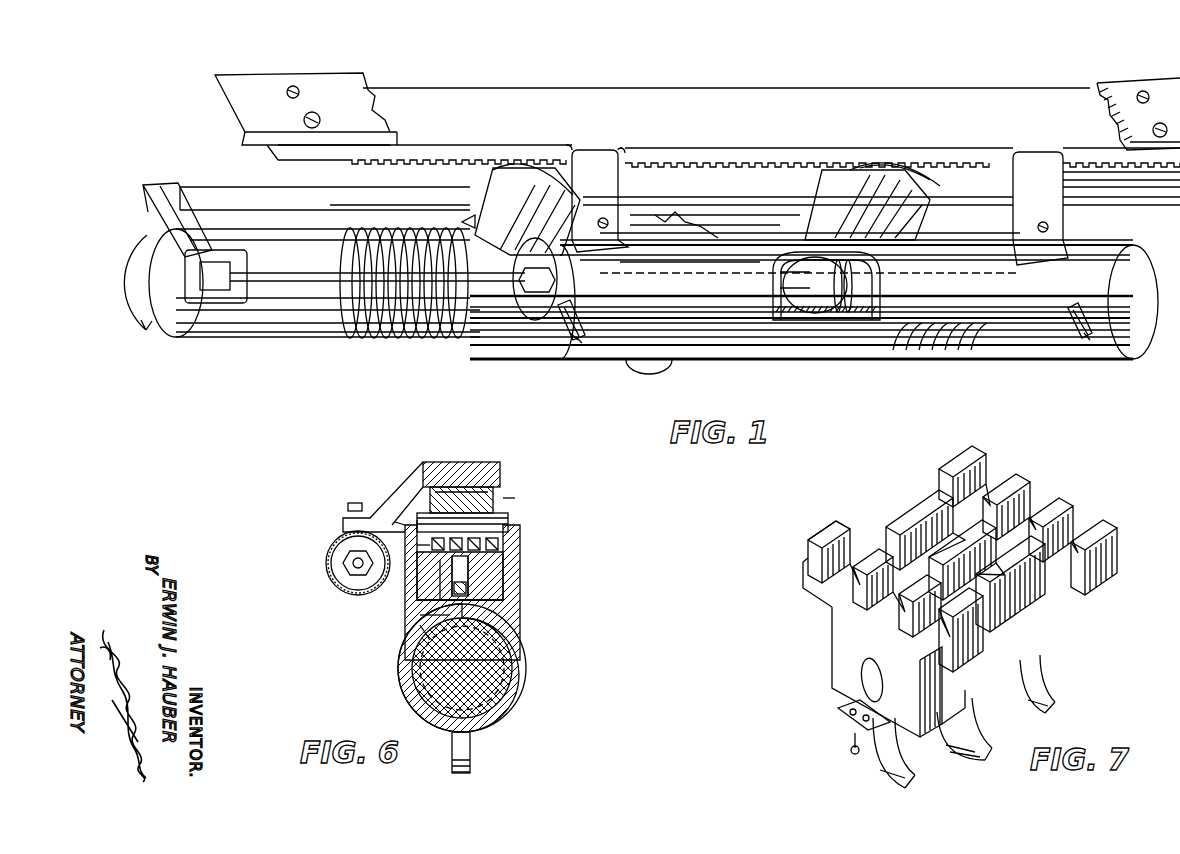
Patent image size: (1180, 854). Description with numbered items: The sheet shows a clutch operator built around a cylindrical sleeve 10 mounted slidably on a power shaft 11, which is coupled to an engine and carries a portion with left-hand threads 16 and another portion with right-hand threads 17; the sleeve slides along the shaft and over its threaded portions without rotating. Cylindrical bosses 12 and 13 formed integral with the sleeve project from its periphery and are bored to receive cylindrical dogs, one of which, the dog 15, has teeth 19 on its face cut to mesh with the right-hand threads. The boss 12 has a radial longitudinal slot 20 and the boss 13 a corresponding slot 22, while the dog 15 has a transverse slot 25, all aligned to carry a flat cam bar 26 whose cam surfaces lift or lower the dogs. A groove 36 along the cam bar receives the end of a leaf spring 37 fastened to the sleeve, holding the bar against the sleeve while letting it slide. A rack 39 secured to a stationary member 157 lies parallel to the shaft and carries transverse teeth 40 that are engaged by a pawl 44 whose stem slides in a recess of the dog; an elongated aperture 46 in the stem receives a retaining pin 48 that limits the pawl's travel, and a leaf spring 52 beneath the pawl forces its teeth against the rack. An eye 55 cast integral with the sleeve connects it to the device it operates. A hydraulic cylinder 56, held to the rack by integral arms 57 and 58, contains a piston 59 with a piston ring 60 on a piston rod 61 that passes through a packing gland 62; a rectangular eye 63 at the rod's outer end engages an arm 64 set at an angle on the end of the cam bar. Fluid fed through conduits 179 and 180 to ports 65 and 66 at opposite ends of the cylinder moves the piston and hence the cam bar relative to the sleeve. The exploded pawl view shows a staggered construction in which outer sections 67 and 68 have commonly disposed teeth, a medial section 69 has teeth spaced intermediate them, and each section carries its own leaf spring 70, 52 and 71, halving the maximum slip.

In FIG. 1, the cylindrical sleeve 10 is at (797, 340).
In FIG. 6, the cylindrical sleeve 10 is at (525, 664).
In FIG. 1, the power shaft 11 is at (285, 300).
In FIG. 6, the power shaft 11 is at (478, 668).
In FIG. 1, the cylindrical boss 12 is at (506, 208).
In FIG. 1, the cylindrical boss 13 is at (846, 216).
In FIG. 6, the cylindrical boss 13 is at (515, 612).
In FIG. 6, the dog 15 is at (398, 525).
In FIG. 1, the left-hand threads 16 is at (420, 330).
In FIG. 1, the right-hand threads 17 is at (945, 347).
In FIG. 6, the right-hand threads 17 is at (430, 640).
In FIG. 6, the teeth 19 is at (433, 618).
In FIG. 1, the longitudinal slot 20 is at (492, 182).
In FIG. 1, the longitudinal slot 22 is at (830, 192).
In FIG. 6, the transverse slot 25 is at (435, 578).
In FIG. 6, the cam bar 26 is at (468, 585).
In FIG. 1, the groove 36 is at (418, 202).
In FIG. 6, the groove 36 is at (435, 598).
In FIG. 1, the leaf spring 37 is at (707, 212).
In FIG. 1, the rack 39 is at (732, 115).
In FIG. 6, the rack 39 is at (450, 462).
In FIG. 1, the teeth 40 is at (740, 166).
In FIG. 6, the pawl 44 is at (516, 504).
In FIG. 6, the elongated aperture 46 is at (425, 545).
In FIG. 7, the elongated aperture 46 is at (862, 684).
In FIG. 6, the retaining pin 48 is at (507, 520).
In FIG. 6, the leaf spring 52 is at (480, 556).
In FIG. 7, the leaf spring 52 is at (968, 730).
In FIG. 1, the eye 55 is at (665, 368).
In FIG. 6, the eye 55 is at (472, 750).
In FIG. 1, the hydraulic cylinder 56 is at (712, 271).
In FIG. 6, the hydraulic cylinder 56 is at (327, 562).
In FIG. 1, the arm 57 is at (609, 199).
In FIG. 6, the arm 57 is at (398, 478).
In FIG. 1, the arm 58 is at (1050, 205).
In FIG. 1, the piston 59 is at (820, 258).
In FIG. 6, the piston 59 is at (340, 577).
In FIG. 1, the piston ring 60 is at (846, 282).
In FIG. 6, the piston ring 60 is at (345, 596).
In FIG. 1, the piston rod 61 is at (328, 273).
In FIG. 1, the packing gland 62 is at (525, 268).
In FIG. 1, the rectangular eye 63 is at (247, 263).
In FIG. 1, the arm 64 is at (173, 198).
In FIG. 1, the port 65 is at (568, 302).
In FIG. 1, the port 66 is at (1073, 312).
In FIG. 6, the outer section 67 is at (440, 520).
In FIG. 7, the outer section 67 is at (850, 625).
In FIG. 6, the outer section 68 is at (500, 498).
In FIG. 7, the outer section 68 is at (1032, 526).
In FIG. 6, the medial section 69 is at (465, 505).
In FIG. 7, the medial section 69 is at (884, 523).
In FIG. 7, the leaf spring 70 is at (870, 766).
In FIG. 6, the leaf spring 71 is at (507, 545).
In FIG. 7, the leaf spring 71 is at (1047, 700).
In FIG. 1, the stationary member 157 is at (290, 106).
In FIG. 1, the conduit 179 is at (565, 335).
In FIG. 1, the conduit 180 is at (1092, 315).